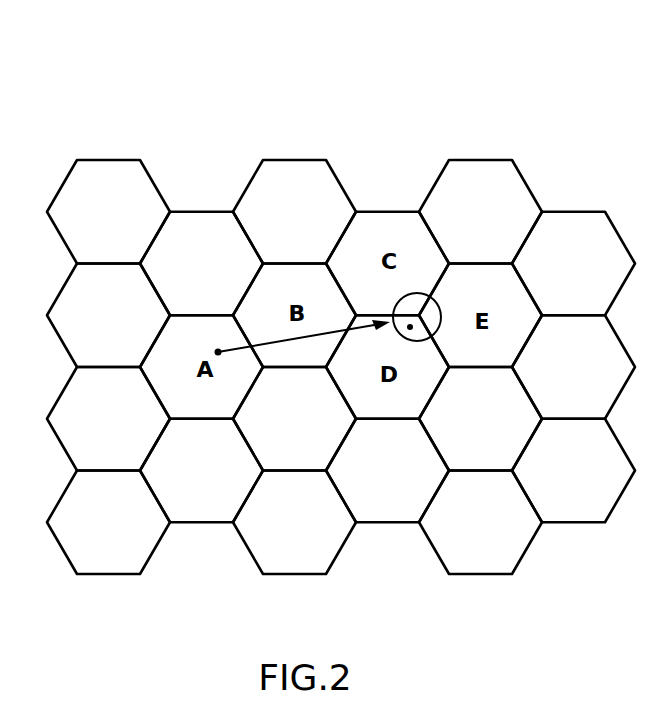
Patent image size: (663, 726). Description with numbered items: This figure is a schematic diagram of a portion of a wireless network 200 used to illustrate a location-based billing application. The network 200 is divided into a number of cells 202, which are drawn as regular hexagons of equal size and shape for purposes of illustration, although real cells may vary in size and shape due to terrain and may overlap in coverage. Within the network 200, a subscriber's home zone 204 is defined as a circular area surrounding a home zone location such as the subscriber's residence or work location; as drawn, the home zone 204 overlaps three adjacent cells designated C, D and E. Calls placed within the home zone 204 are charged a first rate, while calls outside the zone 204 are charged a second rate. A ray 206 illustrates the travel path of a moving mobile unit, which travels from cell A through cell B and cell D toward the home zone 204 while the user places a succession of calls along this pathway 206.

The wireless network 200 is at (341, 300).
The cells 202 is at (520, 195).
The home zone 204 is at (445, 297).
The ray 206 is at (278, 341).